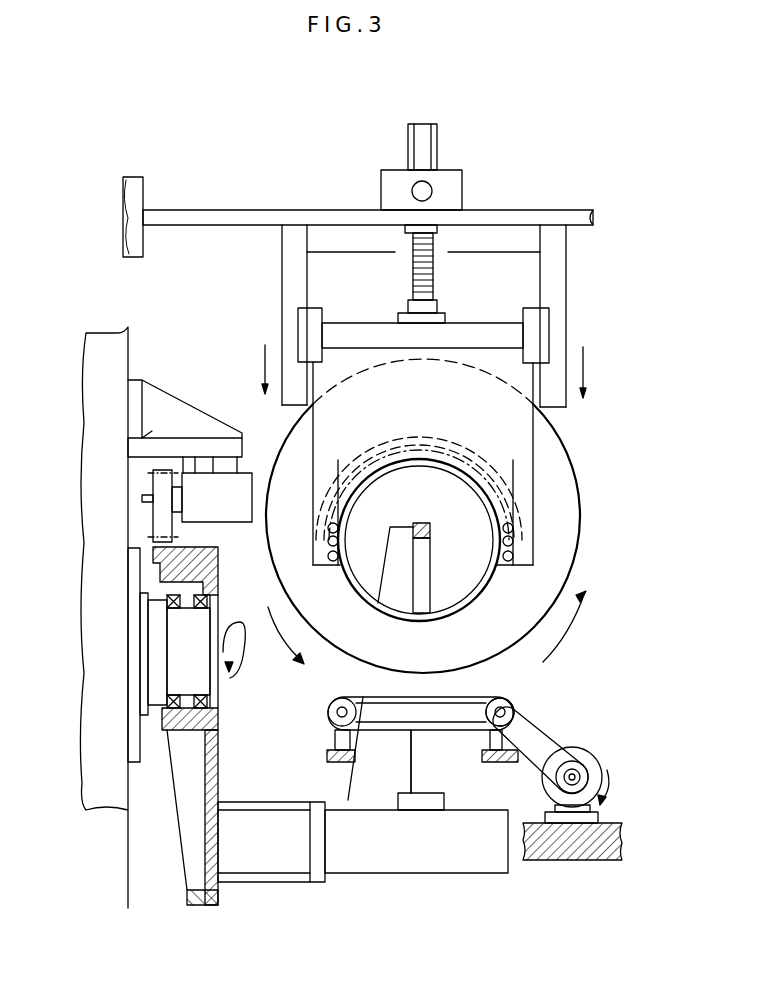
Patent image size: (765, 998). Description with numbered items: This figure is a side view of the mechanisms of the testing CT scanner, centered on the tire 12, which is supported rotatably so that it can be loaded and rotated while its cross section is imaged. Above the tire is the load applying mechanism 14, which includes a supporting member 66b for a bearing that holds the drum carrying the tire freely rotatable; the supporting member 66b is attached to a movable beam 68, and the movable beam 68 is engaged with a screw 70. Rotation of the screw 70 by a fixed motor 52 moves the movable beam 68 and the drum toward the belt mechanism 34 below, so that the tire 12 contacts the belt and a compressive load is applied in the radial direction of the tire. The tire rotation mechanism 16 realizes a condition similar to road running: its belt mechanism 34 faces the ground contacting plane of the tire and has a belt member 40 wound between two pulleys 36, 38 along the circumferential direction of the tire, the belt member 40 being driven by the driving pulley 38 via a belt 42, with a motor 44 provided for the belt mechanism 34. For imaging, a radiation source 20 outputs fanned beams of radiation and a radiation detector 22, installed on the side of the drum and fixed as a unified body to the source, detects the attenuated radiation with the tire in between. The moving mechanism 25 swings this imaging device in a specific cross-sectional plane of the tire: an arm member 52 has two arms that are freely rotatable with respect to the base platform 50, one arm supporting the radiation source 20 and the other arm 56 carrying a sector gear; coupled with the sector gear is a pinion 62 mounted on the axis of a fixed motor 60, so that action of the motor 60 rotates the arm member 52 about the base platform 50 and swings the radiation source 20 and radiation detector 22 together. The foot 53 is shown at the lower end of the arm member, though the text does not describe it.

The tire 12 is at (575, 522).
The load applying mechanism 14 is at (317, 198).
The tire rotation mechanism 16 is at (598, 695).
The radiation source 20 is at (422, 805).
The radiation detector 22 is at (420, 522).
The moving mechanism 25 is at (158, 860).
The belt mechanism 34 is at (441, 732).
The pulley 36 is at (330, 714).
The driving pulley 38 is at (505, 703).
The belt member 40 is at (425, 730).
The belt 42 is at (547, 739).
The motor 44 is at (593, 762).
The base platform 50 is at (143, 748).
The arm member 52 is at (457, 170).
The foot 53 is at (203, 900).
The arm 56 is at (214, 570).
The motor 60 is at (248, 488).
The pinion 62 is at (160, 520).
The supporting member 66b is at (533, 412).
The movable beam 68 is at (479, 323).
The screw 70 is at (412, 274).